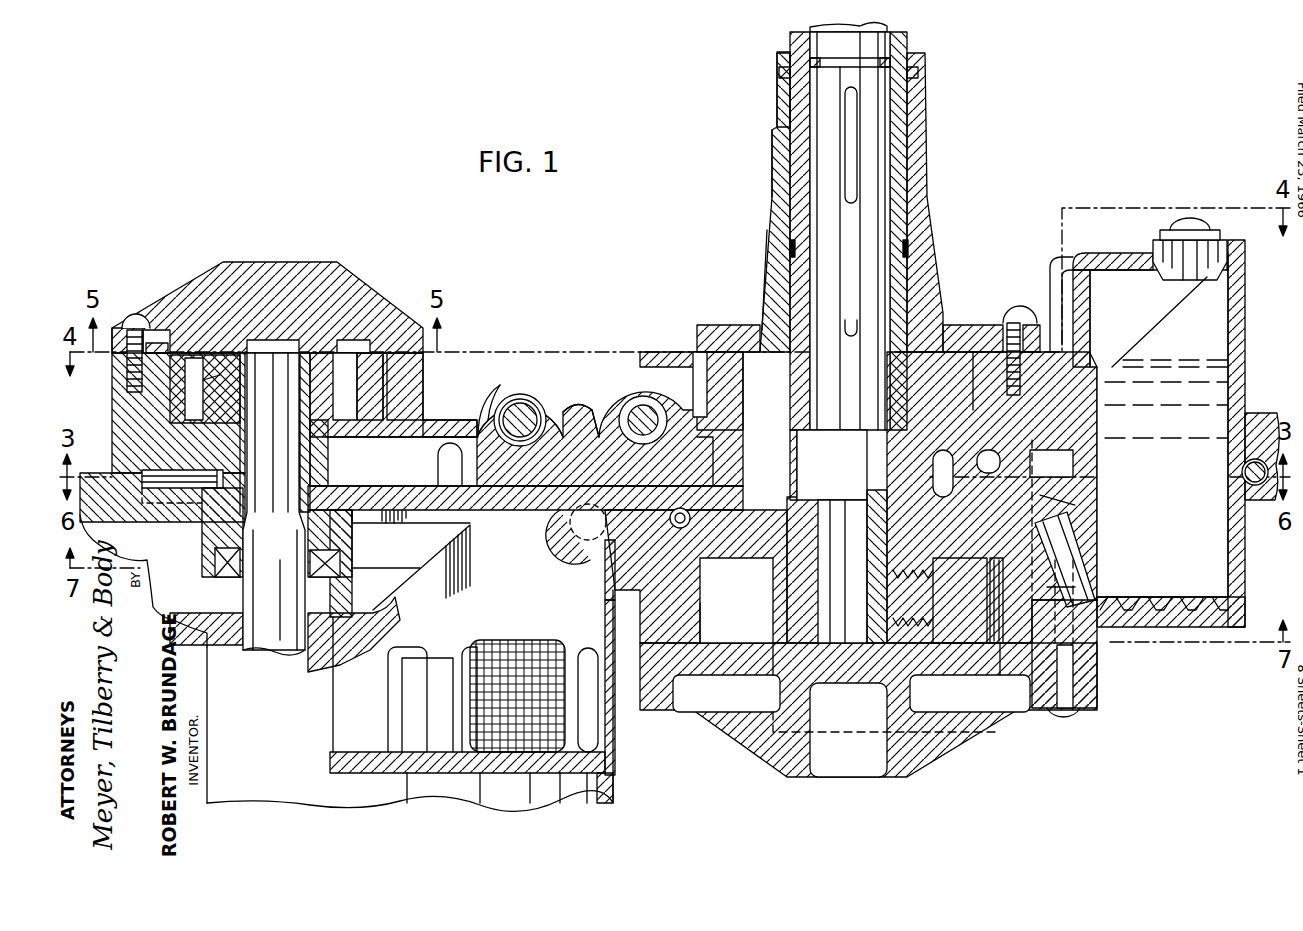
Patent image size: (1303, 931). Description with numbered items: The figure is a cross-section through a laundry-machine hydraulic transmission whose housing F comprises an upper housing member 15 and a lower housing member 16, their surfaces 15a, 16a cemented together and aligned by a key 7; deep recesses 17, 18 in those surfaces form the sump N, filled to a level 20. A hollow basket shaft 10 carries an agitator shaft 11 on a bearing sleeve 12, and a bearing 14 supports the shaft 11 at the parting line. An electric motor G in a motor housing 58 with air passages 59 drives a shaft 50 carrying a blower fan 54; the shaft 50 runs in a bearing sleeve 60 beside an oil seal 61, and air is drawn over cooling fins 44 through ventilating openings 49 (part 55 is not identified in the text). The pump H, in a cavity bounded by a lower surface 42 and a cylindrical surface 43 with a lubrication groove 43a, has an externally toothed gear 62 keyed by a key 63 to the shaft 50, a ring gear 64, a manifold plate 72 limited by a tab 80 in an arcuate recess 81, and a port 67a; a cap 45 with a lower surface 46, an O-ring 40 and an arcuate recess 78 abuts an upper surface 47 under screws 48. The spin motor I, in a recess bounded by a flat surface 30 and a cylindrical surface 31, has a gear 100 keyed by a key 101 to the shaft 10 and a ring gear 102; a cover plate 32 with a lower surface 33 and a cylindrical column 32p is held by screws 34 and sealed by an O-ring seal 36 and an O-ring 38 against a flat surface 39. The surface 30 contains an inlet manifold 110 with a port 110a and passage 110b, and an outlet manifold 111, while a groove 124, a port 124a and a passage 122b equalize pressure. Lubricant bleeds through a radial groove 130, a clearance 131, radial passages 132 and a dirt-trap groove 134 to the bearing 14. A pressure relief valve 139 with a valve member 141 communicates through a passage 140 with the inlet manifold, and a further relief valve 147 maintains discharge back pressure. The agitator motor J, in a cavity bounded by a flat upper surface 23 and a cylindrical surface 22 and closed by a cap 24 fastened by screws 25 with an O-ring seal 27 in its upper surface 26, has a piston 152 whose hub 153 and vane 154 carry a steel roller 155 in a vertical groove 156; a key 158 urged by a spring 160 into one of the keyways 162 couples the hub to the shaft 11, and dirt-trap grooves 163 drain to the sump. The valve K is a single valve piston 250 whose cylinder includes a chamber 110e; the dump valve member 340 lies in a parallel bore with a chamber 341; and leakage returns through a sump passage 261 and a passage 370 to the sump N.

The hollow shaft 10 is at (905, 42).
The shaft 11 is at (873, 180).
The bearing sleeve 12 is at (933, 297).
The bearing 14 is at (933, 544).
The upper housing member 15 is at (123, 410).
The lower surface 15a is at (610, 482).
The lower housing member 16 is at (203, 536).
The upper surface 16a is at (668, 474).
The recess 17 is at (1120, 280).
The recess 18 is at (1190, 583).
The level 20 is at (1160, 358).
The inner cylindrical surface 22 is at (702, 605).
The flat upper surface 23 is at (727, 563).
The cap 24 is at (707, 715).
The screws 25 is at (1072, 722).
The upper surface 26 is at (737, 645).
The O-ring seal 27 is at (1020, 668).
The flat surface 30 is at (1093, 398).
The cylindrical surface 31 is at (703, 350).
The cover plate 32 is at (770, 270).
The cylindrical column 32p is at (775, 147).
The lower surface 33 is at (722, 328).
The screws 34 is at (1020, 307).
The O-ring seal 36 is at (781, 72).
The O-ring 38 is at (1008, 310).
The flat surface 39 is at (693, 333).
The O-ring 40 is at (403, 345).
The lower surface 42 is at (190, 406).
The inner cylindrical surface 43 is at (215, 365).
The vertical groove 43a is at (380, 400).
The cooling fins 44 is at (100, 367).
The cap 45 is at (327, 275).
The lower surface 46 is at (385, 345).
The upper surface 47 is at (163, 340).
The screws 48 is at (128, 322).
The ventilating openings 49 is at (174, 566).
The shaft 50 is at (273, 637).
The blower fan 54 is at (437, 567).
The housing wall 55 is at (222, 640).
The motor housing 58 is at (450, 800).
The air passages 59 is at (397, 720).
The bearing sleeve 60 is at (312, 466).
The oil seal 61 is at (323, 570).
The externally toothed gear 62 is at (348, 350).
The key 63 is at (292, 350).
The internally toothed ring gear 64 is at (380, 382).
The port 67a is at (345, 433).
The manifold plate 72 is at (243, 345).
The arcuate recess 78 is at (338, 343).
The tab 80 is at (168, 330).
The arcuate recess 81 is at (140, 374).
The externally toothed gear 100 is at (812, 397).
The key 101 is at (878, 438).
The internally toothed ring gear 102 is at (973, 318).
The inlet manifold 110 is at (733, 470).
The port 110a is at (712, 468).
The passage 110b is at (393, 447).
The valve chamber 110e is at (503, 395).
The outlet manifold 111 is at (1093, 420).
The passage 122b is at (1033, 475).
The groove 124 is at (1093, 353).
The port 124a is at (1076, 445).
The radial groove 130 is at (766, 303).
The clearance 131 is at (795, 243).
The radial passages 132 is at (797, 98).
The dirt-trap groove 134 is at (853, 153).
The pressure relief valve 139 is at (607, 587).
The passage 140 is at (607, 610).
The valve member 141 is at (607, 570).
The pressure relief valve 147 is at (545, 578).
The piston 152 is at (927, 640).
The central hub 153 is at (772, 645).
The vane 154 is at (997, 672).
The steel roller 155 is at (1048, 588).
The vertical groove 156 is at (1083, 637).
The key 158 is at (893, 645).
The spring 160 is at (948, 648).
The key-ways 162 is at (833, 640).
The dirt trap grooves 163 is at (977, 470).
The valve piston 250 is at (536, 402).
The sump passage 261 is at (1035, 498).
The dump valve member 340 is at (626, 390).
The valve chamber 341 is at (612, 352).
The passage 370 is at (1072, 548).
The housing F is at (488, 359).
The electric motor G is at (622, 806).
The hydraulic pump H is at (221, 365).
The hydraulic spin motor I is at (738, 312).
The hydraulic agitator motor J is at (965, 645).
The valve means K is at (541, 393).
The sump N is at (1230, 323).
The key 7 is at (1242, 478).